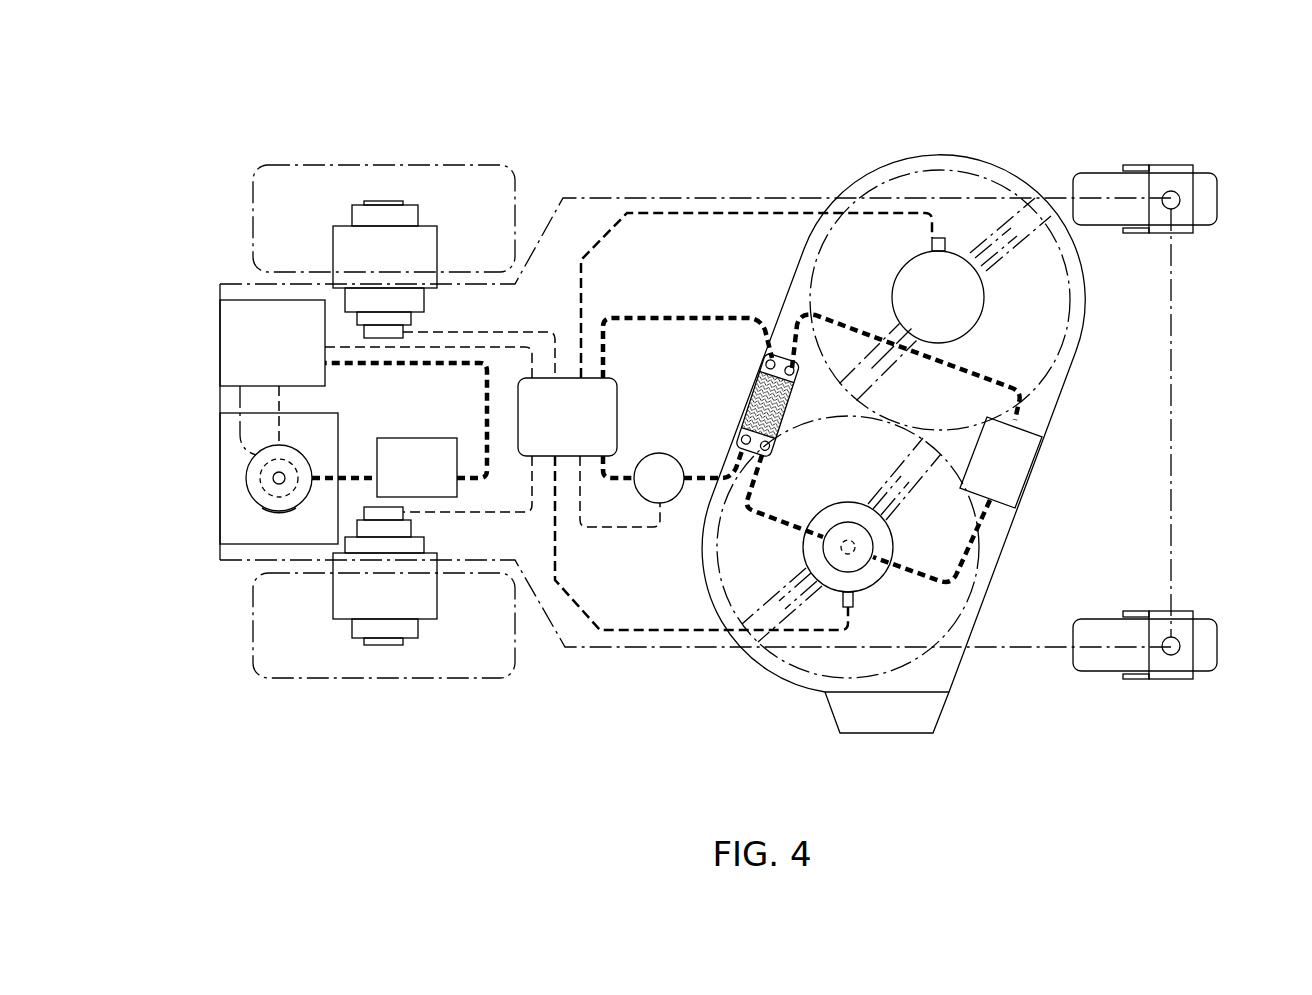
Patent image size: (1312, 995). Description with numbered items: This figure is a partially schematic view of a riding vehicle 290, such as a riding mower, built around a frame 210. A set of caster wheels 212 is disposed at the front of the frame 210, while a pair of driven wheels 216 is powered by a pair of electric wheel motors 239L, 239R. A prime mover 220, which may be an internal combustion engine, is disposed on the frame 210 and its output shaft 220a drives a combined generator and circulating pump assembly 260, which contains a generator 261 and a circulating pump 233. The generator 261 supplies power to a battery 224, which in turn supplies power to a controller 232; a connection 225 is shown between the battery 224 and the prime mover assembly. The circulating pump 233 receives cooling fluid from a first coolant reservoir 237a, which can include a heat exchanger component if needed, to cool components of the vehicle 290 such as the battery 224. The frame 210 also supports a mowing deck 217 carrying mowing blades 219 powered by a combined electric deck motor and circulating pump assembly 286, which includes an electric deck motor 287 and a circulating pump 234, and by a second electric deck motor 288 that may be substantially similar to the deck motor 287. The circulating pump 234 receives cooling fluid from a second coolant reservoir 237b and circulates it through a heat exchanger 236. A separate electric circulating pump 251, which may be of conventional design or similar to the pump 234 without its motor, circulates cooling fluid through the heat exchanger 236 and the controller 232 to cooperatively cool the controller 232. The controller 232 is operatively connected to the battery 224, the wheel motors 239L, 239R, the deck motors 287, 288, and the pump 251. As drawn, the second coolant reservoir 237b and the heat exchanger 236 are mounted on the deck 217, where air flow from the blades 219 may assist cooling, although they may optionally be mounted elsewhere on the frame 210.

The riding vehicle 290 is at (198, 102).
The frame 210 is at (695, 198).
The driven wheels 216 is at (385, 165).
The electric wheel motor 239L is at (312, 247).
The electric wheel motor 239R is at (312, 597).
The battery 224 is at (272, 343).
The prime mover 220 is at (279, 478).
The electrical connection 225 is at (240, 400).
The combined generator and circulating pump assembly 260 is at (238, 461).
The circulating pump 233 is at (292, 461).
The output shaft 220a is at (272, 480).
The generator 261 is at (277, 512).
The first coolant reservoir 237a is at (399, 430).
The controller 232 is at (567, 417).
The electric circulating pump 251 is at (675, 503).
The heat exchanger 236 is at (764, 381).
The mowing deck 217 is at (940, 154).
The combined electric deck motor and circulating pump assembly 286 is at (847, 496).
The electric deck motor 288 is at (985, 300).
The mowing blade 219 is at (888, 363).
The second coolant reservoir 237b is at (972, 433).
The electric deck motor 287 is at (841, 503).
The circulating pump 234 is at (868, 562).
The caster wheels 212 is at (1217, 200).